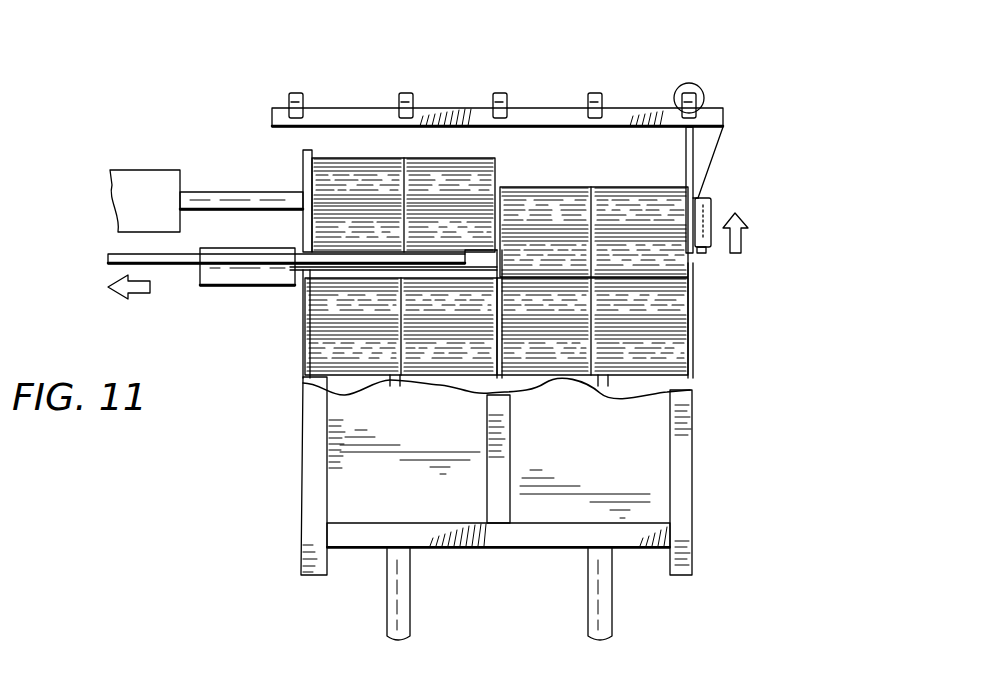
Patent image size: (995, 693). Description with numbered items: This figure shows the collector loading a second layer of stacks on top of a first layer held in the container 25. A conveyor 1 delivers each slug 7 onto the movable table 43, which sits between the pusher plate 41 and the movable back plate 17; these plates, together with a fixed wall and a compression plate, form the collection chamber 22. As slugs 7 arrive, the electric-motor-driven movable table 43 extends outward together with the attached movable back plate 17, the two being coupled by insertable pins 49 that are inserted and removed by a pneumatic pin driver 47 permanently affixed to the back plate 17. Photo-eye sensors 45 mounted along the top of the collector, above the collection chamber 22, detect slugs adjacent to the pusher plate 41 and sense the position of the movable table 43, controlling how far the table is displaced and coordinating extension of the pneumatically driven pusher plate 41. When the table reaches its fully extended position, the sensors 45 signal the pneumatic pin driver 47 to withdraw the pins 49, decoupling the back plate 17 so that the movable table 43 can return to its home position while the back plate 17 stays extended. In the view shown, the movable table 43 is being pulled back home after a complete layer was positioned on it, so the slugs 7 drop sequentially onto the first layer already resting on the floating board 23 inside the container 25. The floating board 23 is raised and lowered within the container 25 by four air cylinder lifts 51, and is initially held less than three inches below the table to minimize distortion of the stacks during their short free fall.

The conveyor 1 is at (250, 272).
The slug 7 is at (565, 187).
The movable back plate 17 is at (693, 183).
The collection chamber 22 is at (498, 160).
The floating board 23 is at (343, 378).
The container 25 is at (695, 458).
The pusher plate 41 is at (302, 165).
The movable table 43 is at (182, 258).
The photo-eye sensors 45 is at (303, 103).
The pneumatic pin driver 47 is at (706, 212).
The pins 49 is at (702, 252).
The air cylinder lifts 51 is at (588, 588).